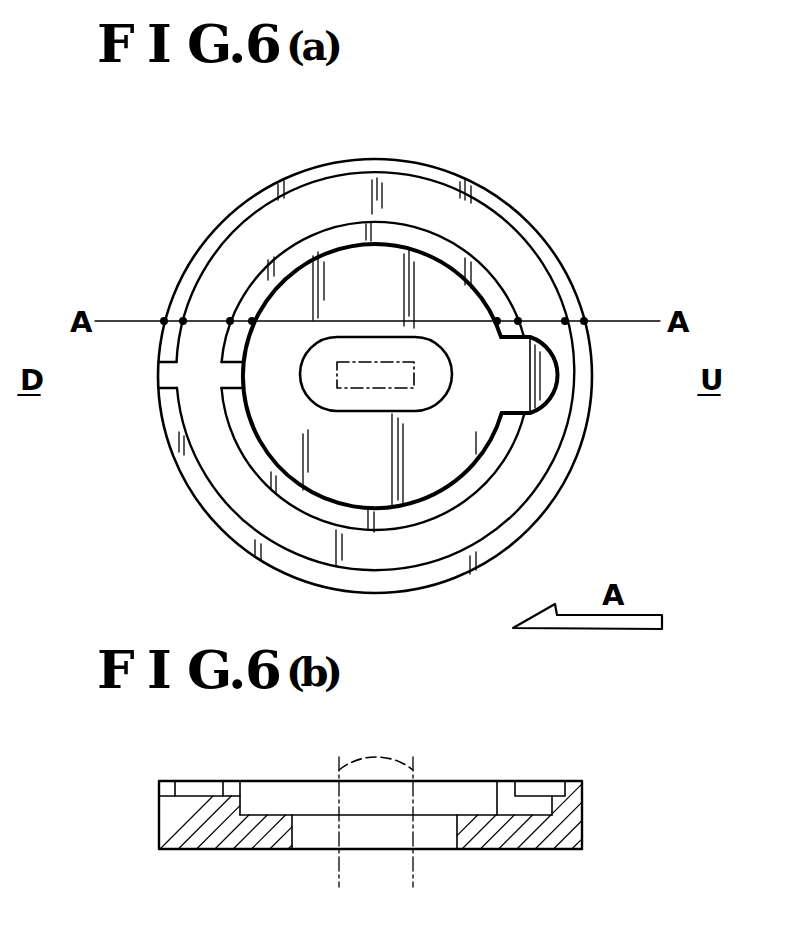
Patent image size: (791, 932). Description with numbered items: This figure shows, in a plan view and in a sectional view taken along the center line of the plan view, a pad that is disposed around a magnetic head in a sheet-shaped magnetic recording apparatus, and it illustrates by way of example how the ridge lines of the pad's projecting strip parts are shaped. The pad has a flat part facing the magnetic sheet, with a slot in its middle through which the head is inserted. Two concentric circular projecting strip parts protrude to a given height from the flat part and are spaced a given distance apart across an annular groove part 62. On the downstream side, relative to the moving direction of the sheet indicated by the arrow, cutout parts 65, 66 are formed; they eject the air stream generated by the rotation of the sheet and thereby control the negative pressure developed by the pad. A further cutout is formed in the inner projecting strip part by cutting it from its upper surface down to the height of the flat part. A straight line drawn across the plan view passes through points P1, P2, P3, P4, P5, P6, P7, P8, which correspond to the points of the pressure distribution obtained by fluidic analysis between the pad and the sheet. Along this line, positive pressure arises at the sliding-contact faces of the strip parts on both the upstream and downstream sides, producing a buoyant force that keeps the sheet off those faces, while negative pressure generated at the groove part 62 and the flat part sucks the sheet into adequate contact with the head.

The annular groove part 62 is at (359, 199).
The cutout part 65 is at (172, 368).
The cutout part 66 is at (227, 372).
The point P1 is at (164, 321).
The point P2 is at (183, 321).
The point P3 is at (230, 321).
The point P4 is at (252, 321).
The point P5 is at (497, 321).
The point P6 is at (518, 321).
The point P7 is at (565, 321).
The point P8 is at (584, 321).